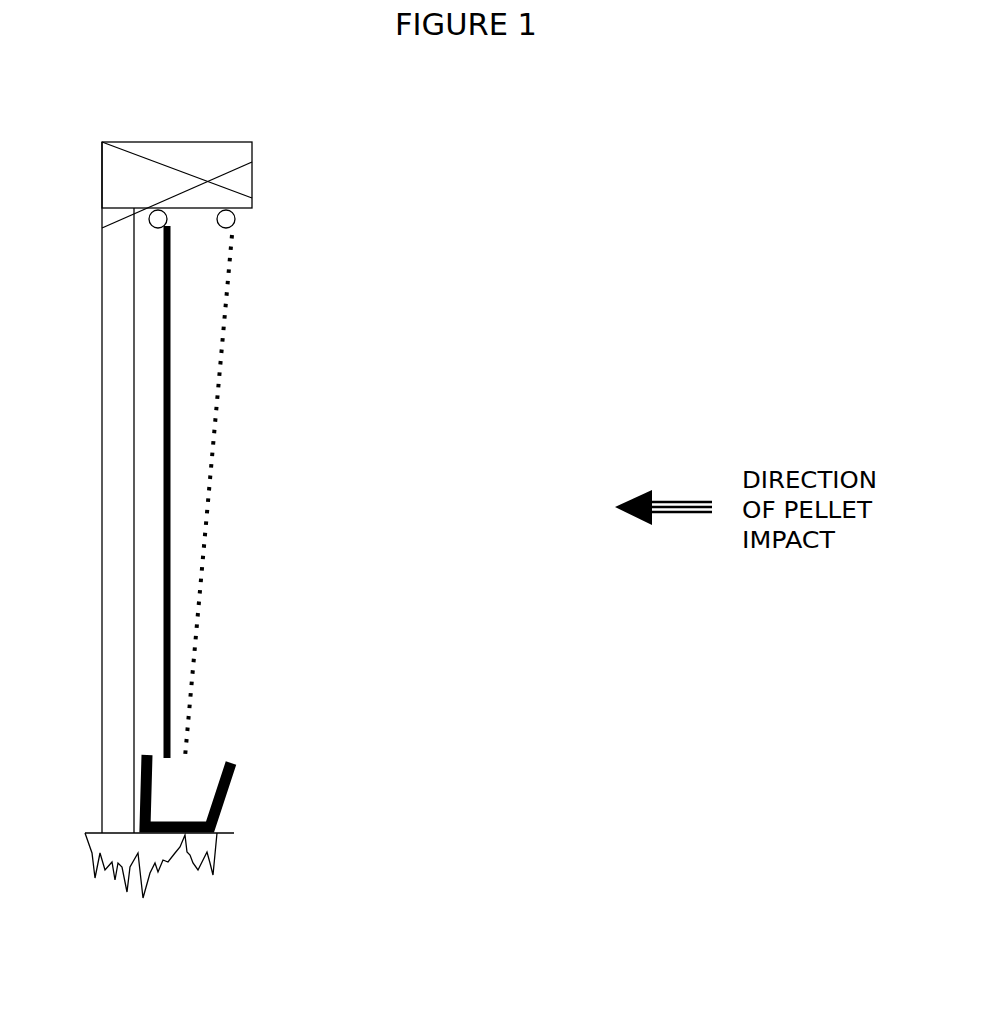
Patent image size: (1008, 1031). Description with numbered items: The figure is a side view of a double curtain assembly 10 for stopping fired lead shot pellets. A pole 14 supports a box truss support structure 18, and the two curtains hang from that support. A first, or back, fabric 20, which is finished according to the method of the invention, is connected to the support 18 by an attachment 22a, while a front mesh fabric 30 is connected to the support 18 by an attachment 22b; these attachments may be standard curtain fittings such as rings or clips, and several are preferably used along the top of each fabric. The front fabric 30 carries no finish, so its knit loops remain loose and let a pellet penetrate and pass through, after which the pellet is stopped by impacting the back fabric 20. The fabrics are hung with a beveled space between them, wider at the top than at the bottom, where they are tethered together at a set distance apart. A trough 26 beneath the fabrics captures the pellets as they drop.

The double curtain assembly 10 is at (663, 230).
The pole 14 is at (102, 735).
The box truss support structure 18 is at (250, 188).
The first (back) fabric 20 is at (168, 545).
The attachment 22a is at (172, 223).
The attachment 22b is at (238, 228).
The trough 26 is at (252, 782).
The mesh fabric 30 is at (220, 397).